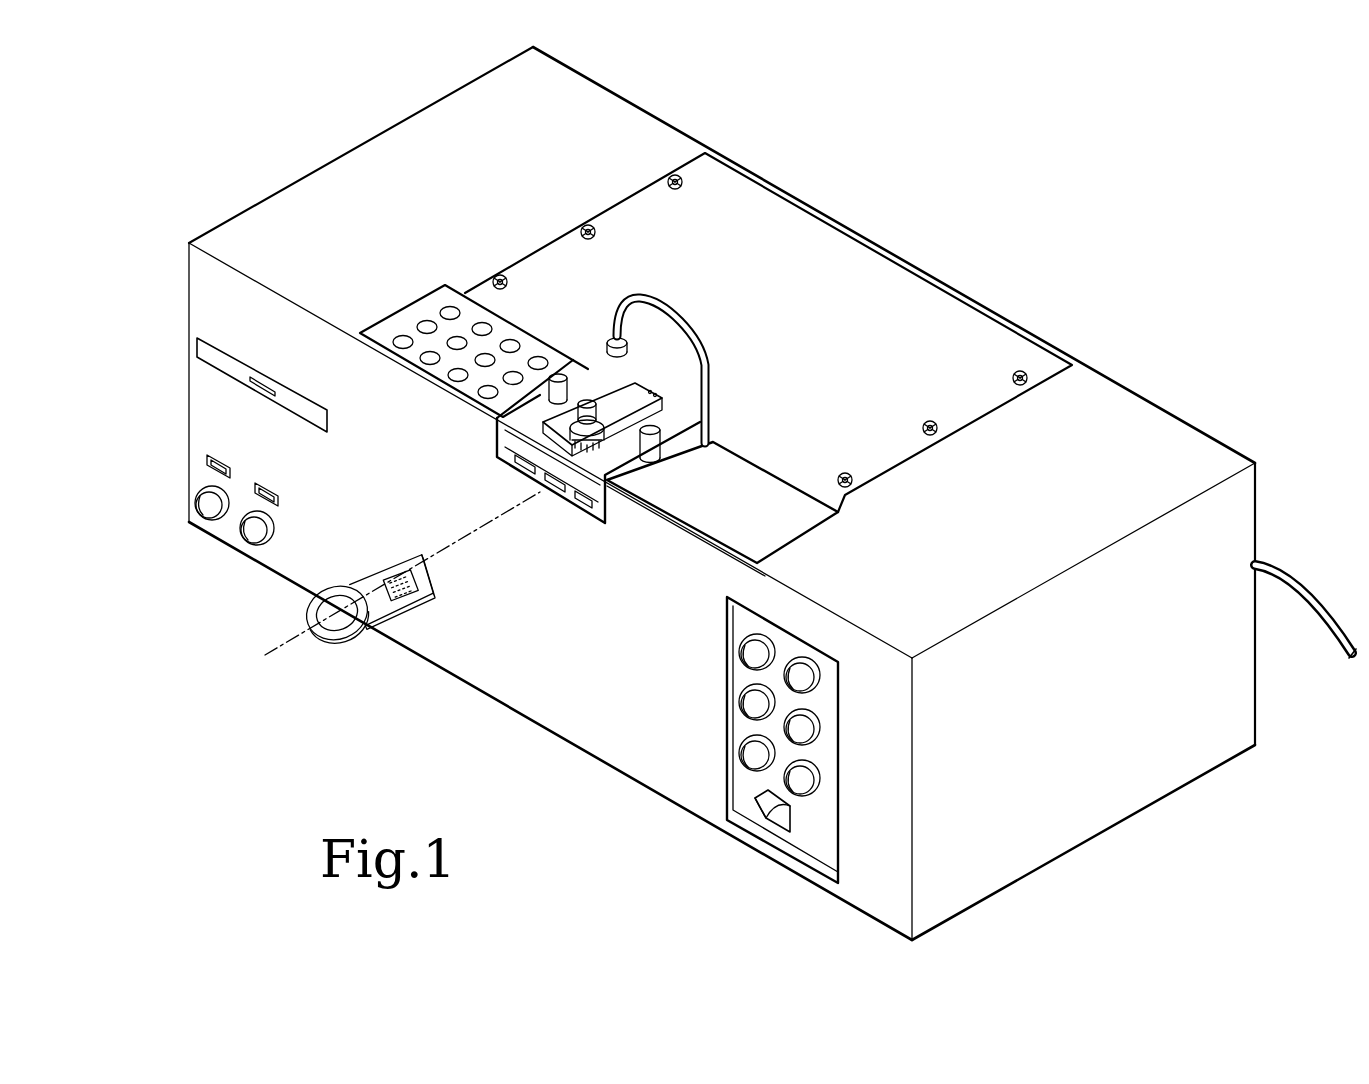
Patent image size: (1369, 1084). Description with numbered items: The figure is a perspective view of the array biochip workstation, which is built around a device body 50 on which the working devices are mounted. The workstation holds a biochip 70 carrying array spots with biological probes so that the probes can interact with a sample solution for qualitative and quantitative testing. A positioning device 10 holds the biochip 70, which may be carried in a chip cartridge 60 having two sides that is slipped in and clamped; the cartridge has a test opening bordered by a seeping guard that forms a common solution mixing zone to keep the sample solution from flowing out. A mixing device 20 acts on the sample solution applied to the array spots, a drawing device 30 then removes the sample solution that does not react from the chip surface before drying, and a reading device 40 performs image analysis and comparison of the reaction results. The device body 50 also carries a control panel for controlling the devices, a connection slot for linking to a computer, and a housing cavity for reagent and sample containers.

The positioning device 10 is at (533, 468).
The mixing device 20 is at (662, 417).
The drawing device 30 is at (715, 350).
The reading device 40 is at (213, 373).
The device body 50 is at (1128, 750).
The chip cartridge 60 is at (375, 635).
The biochip 70 is at (383, 575).